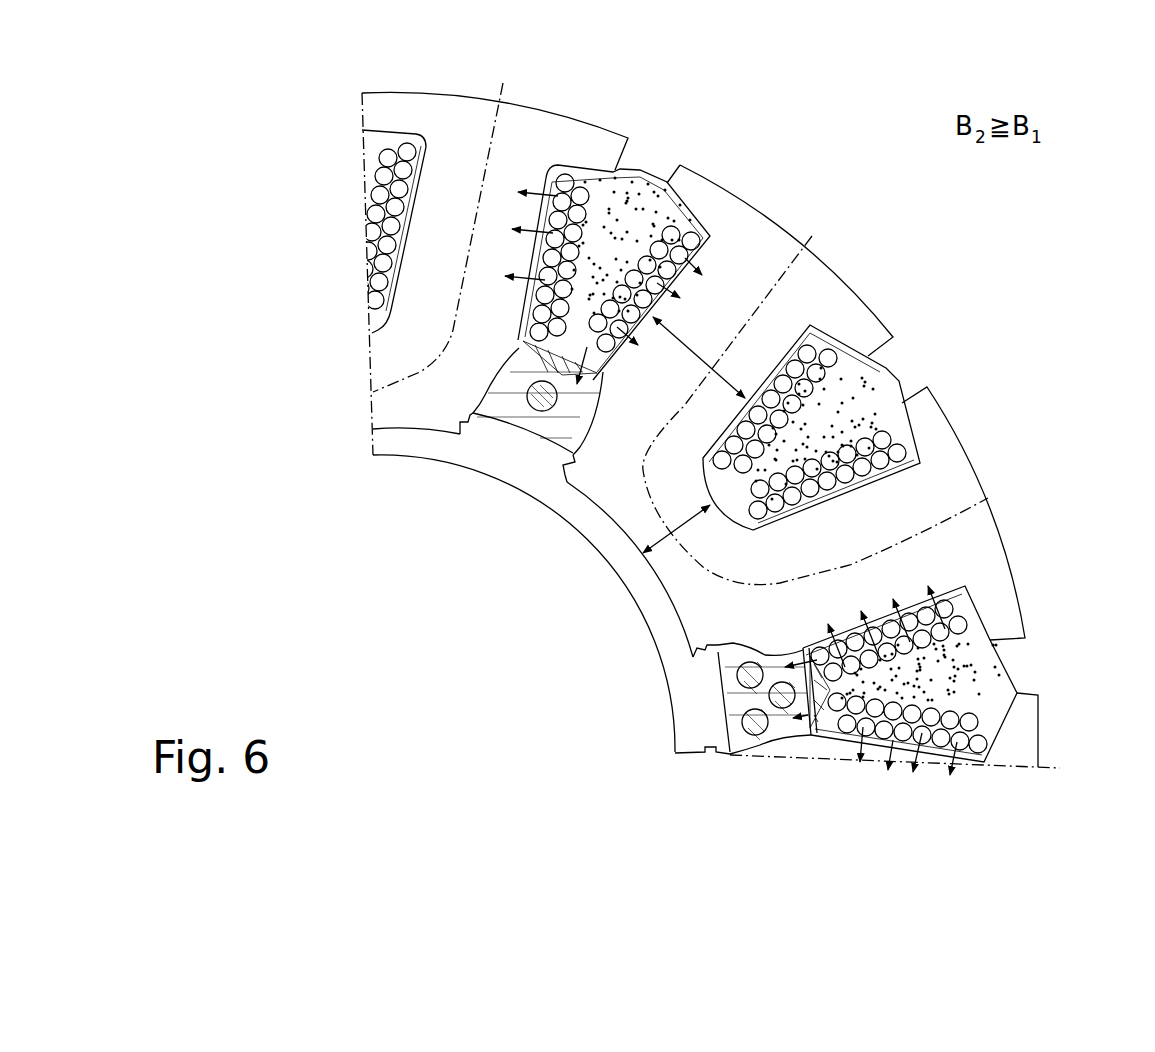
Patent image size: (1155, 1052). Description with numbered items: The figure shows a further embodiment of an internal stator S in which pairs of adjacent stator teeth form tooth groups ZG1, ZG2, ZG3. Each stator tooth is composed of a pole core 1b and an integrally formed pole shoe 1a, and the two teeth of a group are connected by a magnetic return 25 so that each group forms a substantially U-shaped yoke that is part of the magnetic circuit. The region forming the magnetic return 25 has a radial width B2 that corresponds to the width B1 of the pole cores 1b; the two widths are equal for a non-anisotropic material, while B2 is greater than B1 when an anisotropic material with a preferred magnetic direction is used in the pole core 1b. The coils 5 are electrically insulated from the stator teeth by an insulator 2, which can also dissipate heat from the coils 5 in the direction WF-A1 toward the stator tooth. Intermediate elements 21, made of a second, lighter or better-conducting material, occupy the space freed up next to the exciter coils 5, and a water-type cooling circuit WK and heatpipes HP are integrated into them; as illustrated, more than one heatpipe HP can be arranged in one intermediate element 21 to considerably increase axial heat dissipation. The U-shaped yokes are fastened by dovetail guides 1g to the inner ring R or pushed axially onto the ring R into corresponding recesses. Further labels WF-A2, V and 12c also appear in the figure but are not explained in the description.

The internal stator S is at (308, 188).
The tooth group ZG1 is at (393, 127).
The tooth group ZG2 is at (783, 236).
The tooth group ZG3 is at (1018, 767).
The heat dissipation direction WF-A1 is at (532, 230).
The heat flow path A2 WF-A2 is at (533, 362).
The coil 5 is at (578, 192).
The potting compound V is at (628, 217).
The insulator 2 is at (750, 230).
The pole shoe 1a is at (833, 269).
The pole core 1b is at (460, 255).
The dovetail guide 1g is at (455, 430).
The magnetic return 25 is at (692, 510).
The slot liner 12c is at (520, 353).
The water-type cooling circuit WK is at (532, 398).
The intermediate element 21 is at (570, 433).
The inner ring R is at (613, 545).
The heatpipe HP is at (745, 682).
The width of pole core B1 is at (699, 357).
The radial width of magnetic return B2 is at (681, 538).